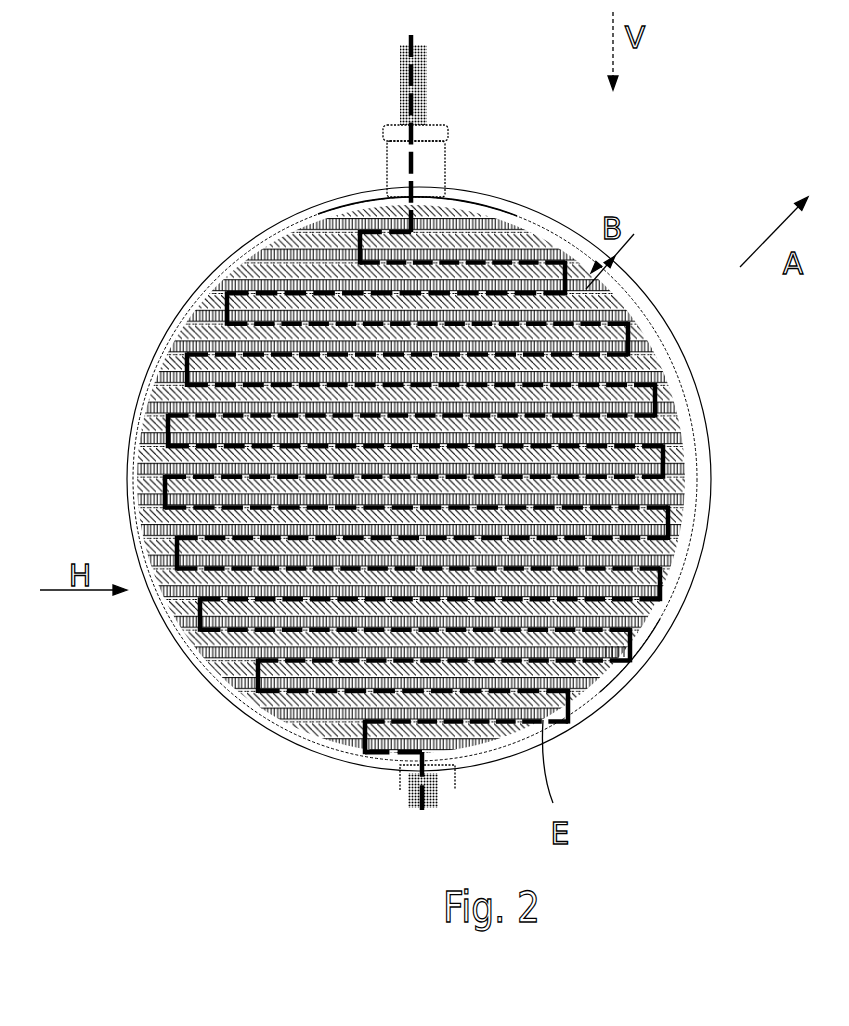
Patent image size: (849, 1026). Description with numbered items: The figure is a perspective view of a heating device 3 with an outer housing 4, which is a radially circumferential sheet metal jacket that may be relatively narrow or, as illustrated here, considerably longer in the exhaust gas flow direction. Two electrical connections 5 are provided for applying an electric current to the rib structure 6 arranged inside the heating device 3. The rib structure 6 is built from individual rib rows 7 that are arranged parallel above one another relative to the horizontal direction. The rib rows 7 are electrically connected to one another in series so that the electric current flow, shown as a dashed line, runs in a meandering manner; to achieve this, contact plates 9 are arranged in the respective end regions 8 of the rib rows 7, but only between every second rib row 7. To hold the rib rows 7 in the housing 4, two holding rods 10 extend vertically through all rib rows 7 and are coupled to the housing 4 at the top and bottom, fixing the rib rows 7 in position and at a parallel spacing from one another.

The heating device 3 is at (186, 203).
The housing 4 is at (708, 442).
The electrical connection 5 is at (428, 88).
The rib structure 6 is at (169, 376).
The rib row 7 is at (675, 583).
The end region 8 is at (630, 670).
The contact plate 9 is at (615, 642).
The holding rod 10 is at (318, 208).